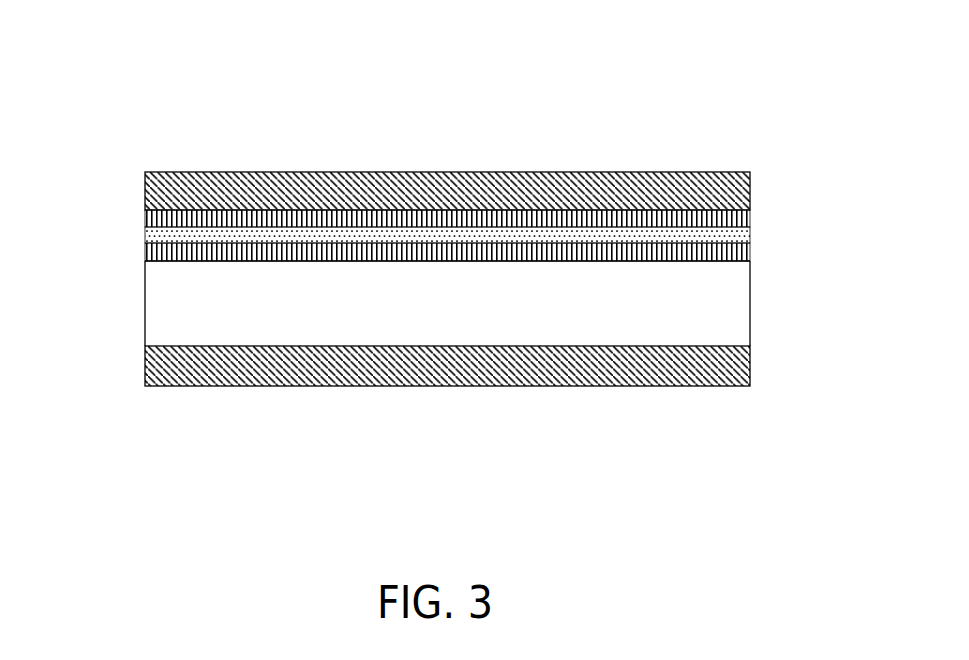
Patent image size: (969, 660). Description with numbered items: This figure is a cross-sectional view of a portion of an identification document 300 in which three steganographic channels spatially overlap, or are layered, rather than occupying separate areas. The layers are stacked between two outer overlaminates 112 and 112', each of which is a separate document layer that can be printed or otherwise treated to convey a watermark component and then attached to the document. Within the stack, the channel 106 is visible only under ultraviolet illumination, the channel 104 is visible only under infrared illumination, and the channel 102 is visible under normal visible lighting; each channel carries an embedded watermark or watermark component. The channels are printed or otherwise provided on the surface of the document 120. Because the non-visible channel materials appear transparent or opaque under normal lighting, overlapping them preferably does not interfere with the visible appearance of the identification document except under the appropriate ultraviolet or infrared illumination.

The identification document 300 is at (245, 80).
The overlaminate 112 is at (493, 177).
The channel 106 is at (145, 215).
The channel 104 is at (750, 237).
The channel 102 is at (145, 257).
The document 120 is at (750, 302).
The overlaminate 112' is at (514, 367).